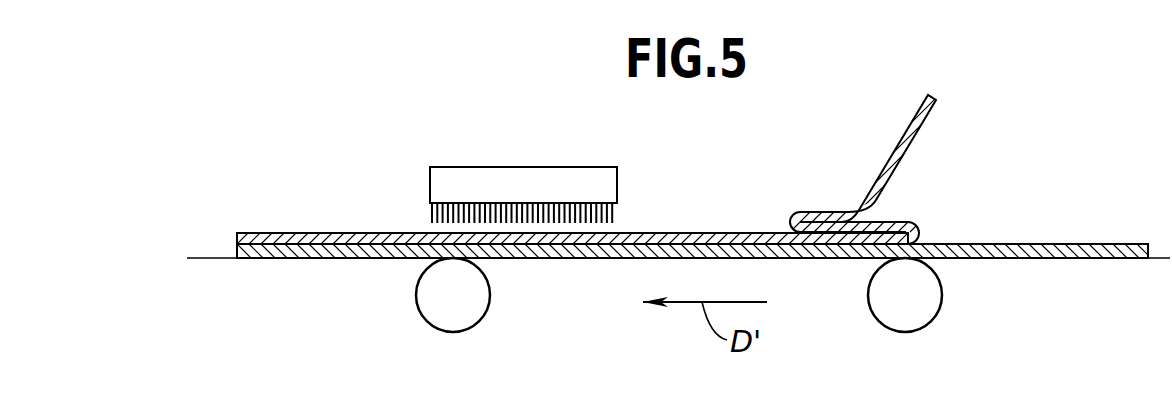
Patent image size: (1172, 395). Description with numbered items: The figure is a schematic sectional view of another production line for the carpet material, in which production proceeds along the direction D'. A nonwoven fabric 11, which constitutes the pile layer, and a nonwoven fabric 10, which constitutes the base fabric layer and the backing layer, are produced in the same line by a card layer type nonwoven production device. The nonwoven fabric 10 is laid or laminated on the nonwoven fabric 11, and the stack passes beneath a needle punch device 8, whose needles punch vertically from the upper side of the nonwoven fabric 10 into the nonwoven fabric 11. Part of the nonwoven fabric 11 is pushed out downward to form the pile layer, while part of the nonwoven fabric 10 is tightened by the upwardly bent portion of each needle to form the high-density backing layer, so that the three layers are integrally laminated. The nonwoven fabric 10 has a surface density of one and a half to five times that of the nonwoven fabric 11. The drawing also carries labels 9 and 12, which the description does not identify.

The needle punch device 8 is at (518, 167).
The cover film layer 9 is at (707, 233).
The nonwoven fabric 10 is at (823, 200).
The nonwoven fabric 11 is at (1023, 246).
The leading end of board 12 is at (285, 232).